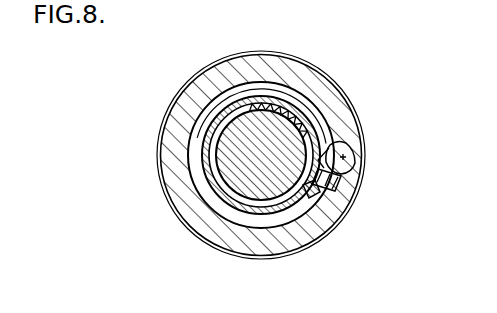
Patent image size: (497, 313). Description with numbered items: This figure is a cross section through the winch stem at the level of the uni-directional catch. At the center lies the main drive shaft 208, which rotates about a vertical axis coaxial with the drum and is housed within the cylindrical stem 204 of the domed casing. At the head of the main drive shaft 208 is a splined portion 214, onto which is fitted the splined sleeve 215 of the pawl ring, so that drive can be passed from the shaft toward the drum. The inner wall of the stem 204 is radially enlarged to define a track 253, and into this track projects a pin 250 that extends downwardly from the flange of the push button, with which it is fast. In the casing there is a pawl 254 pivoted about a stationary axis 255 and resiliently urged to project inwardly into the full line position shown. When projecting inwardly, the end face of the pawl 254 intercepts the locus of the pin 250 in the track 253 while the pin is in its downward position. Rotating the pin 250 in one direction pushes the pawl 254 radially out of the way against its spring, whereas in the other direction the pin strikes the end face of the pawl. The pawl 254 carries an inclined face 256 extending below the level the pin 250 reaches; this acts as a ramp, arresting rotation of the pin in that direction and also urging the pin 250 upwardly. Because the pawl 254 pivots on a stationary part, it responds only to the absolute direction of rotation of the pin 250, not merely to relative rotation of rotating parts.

The pin 250 is at (323, 213).
The track 253 is at (196, 164).
The splined portion 214 is at (300, 115).
The main drive shaft 208 is at (263, 157).
The splined sleeve 215 is at (266, 94).
The cylindrical stem 204 is at (345, 157).
The stationary axis 255 is at (348, 162).
The pawl 254 is at (336, 178).
The inclined face 256 is at (313, 190).